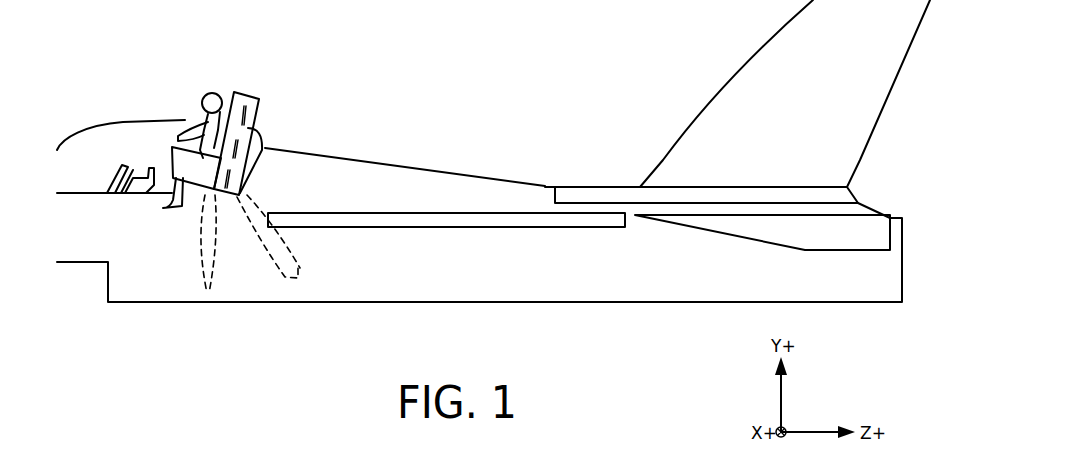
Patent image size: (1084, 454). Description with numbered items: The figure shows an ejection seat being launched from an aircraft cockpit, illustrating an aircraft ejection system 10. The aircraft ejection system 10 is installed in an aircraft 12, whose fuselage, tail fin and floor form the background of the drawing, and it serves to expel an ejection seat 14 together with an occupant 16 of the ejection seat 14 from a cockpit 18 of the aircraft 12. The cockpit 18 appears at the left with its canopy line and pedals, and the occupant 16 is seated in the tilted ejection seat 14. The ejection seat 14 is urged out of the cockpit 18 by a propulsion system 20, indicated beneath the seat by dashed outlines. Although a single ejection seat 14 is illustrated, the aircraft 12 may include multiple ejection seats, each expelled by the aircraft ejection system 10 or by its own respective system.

The aircraft ejection system 10 is at (402, 57).
The aircraft 12 is at (513, 273).
The ejection seat 14 is at (244, 92).
The occupant 16 is at (203, 100).
The cockpit 18 is at (93, 175).
The propulsion system 20 is at (205, 250).